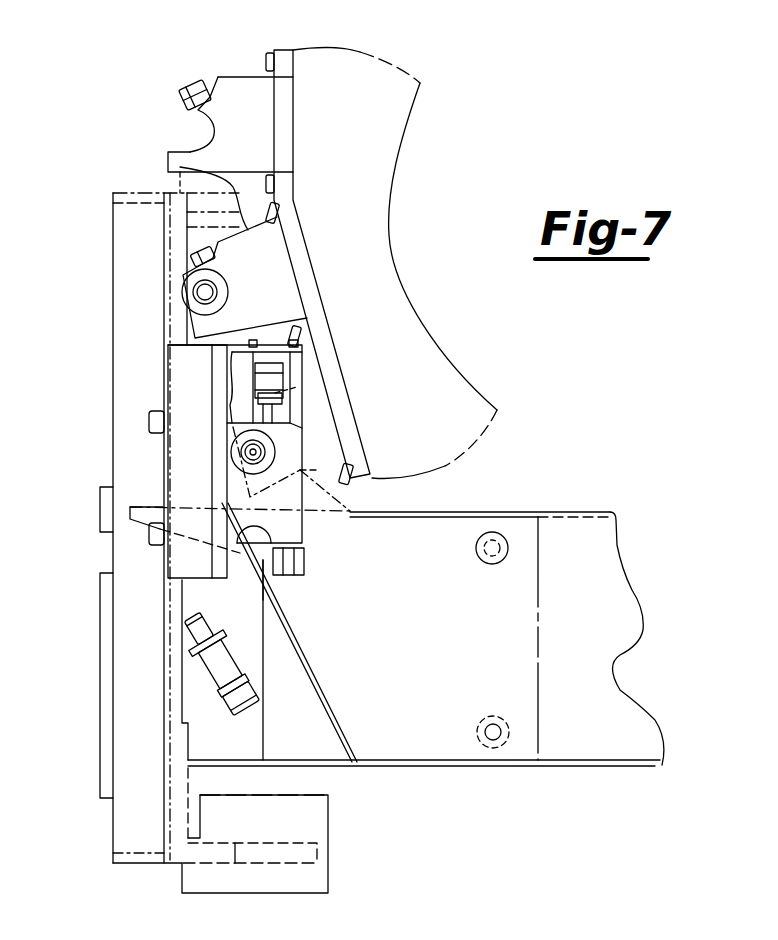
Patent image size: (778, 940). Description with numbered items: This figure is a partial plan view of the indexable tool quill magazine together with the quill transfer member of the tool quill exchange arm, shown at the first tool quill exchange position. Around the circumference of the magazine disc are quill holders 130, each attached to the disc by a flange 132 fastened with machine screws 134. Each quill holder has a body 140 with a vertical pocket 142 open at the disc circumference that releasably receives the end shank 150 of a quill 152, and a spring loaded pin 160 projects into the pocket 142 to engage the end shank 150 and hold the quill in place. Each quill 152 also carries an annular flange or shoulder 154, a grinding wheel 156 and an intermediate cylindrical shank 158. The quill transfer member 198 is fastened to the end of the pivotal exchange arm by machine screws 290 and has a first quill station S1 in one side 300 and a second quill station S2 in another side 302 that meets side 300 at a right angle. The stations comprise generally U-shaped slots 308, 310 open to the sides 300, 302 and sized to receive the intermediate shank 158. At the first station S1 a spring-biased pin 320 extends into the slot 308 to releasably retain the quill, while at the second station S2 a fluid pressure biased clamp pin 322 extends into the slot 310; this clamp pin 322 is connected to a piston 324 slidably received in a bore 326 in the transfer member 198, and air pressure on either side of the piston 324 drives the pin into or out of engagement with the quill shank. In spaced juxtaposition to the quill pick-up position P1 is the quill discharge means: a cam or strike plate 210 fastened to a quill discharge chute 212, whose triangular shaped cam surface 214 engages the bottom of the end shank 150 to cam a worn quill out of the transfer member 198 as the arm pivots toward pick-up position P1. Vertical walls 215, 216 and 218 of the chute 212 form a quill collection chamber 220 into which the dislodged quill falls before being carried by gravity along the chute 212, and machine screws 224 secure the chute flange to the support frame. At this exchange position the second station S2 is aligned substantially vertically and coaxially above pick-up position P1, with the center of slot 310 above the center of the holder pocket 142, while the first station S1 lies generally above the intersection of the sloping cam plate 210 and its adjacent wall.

The quill holder 130 is at (243, 70).
The flange 132 is at (282, 55).
The machine screw 134 is at (257, 53).
The body 140 is at (258, 144).
The vertical pocket 142 is at (197, 127).
The spring loaded pin 160 is at (183, 110).
The quill transfer member 198 is at (222, 373).
The machine screw 290 is at (150, 413).
The quill pick-up position P1 is at (222, 450).
The cam or strike plate 210 is at (190, 501).
The triangular shaped cam surface 214 is at (130, 508).
The side of transfer member 300 is at (222, 593).
The annular flange or shoulder 154 is at (192, 670).
The end shank 150 is at (182, 628).
The intermediate cylindrical shank 158 is at (228, 684).
The grinding wheel 156 is at (225, 712).
The quill 152 is at (268, 708).
The U-shaped slot 308 is at (235, 580).
The bore 326 is at (253, 340).
The piston 324 is at (273, 380).
The fluid pressure biased clamp pin 322 is at (263, 413).
The U-shaped slot 310 is at (277, 433).
The first quill station S1 is at (287, 537).
The second quill station S2 is at (272, 478).
The side of transfer member 302 is at (360, 516).
The spring-biased pin 320 is at (303, 560).
The vertical wall 215 is at (265, 585).
The quill collection chamber 220 is at (278, 670).
The vertical wall 216 is at (330, 700).
The quill discharge chute 212 is at (452, 775).
The vertical wall 218 is at (340, 770).
The machine screw 224 is at (505, 540).